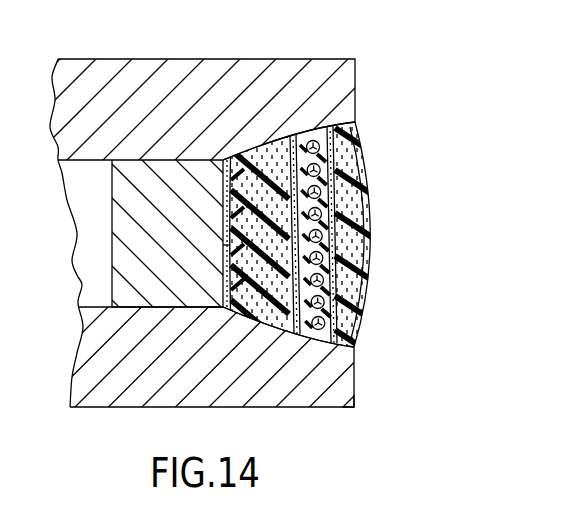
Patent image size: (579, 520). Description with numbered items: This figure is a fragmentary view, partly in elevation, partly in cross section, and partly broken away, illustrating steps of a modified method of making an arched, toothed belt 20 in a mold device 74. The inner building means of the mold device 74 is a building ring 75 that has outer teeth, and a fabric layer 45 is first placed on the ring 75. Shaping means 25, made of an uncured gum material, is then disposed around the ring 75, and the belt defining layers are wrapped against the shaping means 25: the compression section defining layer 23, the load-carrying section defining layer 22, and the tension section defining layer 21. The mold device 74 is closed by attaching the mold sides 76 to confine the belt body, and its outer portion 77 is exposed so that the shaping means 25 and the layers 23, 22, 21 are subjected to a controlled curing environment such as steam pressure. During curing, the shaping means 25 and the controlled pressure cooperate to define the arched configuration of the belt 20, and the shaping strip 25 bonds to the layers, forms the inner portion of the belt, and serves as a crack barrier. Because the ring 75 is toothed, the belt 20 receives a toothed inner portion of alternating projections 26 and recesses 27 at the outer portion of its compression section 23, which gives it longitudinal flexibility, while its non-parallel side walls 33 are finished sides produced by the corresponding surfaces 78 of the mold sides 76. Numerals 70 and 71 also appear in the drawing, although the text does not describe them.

The belt 20 is at (283, 224).
The tension section defining layer 21 is at (337, 113).
The load-carrying section defining layer 22 is at (304, 125).
The compression section defining layer 23 is at (255, 136).
The shaping means 25 is at (230, 159).
The projections 26 is at (223, 218).
The recesses 27 is at (230, 245).
The non-parallel side walls 33 is at (274, 140).
The fabric layer 45 is at (215, 290).
The seal assembly 70 is at (8, 185).
The housing 71 is at (8, 252).
The mold device 74 is at (357, 402).
The building ring 75 is at (123, 273).
The mold sides 76 is at (115, 64).
The outer portion of the mold device 77 is at (378, 269).
The surfaces of the mold sides 78 is at (229, 193).